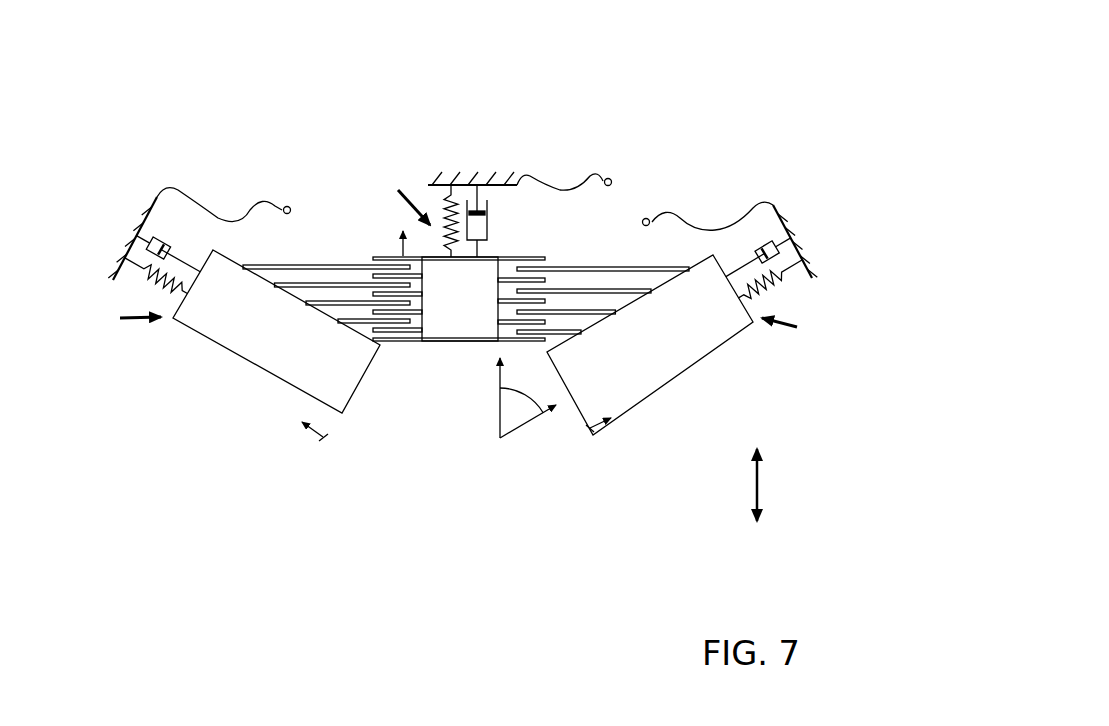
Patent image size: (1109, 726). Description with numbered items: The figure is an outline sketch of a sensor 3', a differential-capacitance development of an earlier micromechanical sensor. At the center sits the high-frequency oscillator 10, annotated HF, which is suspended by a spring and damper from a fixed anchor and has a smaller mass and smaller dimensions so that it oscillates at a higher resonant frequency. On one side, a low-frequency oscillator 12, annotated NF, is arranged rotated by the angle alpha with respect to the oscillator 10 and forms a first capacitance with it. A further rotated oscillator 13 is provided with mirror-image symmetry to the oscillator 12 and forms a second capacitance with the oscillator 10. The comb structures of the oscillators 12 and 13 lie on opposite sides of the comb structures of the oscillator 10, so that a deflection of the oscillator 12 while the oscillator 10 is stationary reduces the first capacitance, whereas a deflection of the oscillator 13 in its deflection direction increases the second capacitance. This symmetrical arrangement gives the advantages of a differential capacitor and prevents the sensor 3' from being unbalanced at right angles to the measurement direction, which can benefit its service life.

The sensor 3' is at (466, 278).
The high-frequency oscillator 10 is at (485, 342).
The low-frequency oscillator 12 is at (652, 382).
The rotated oscillator 13 is at (257, 367).